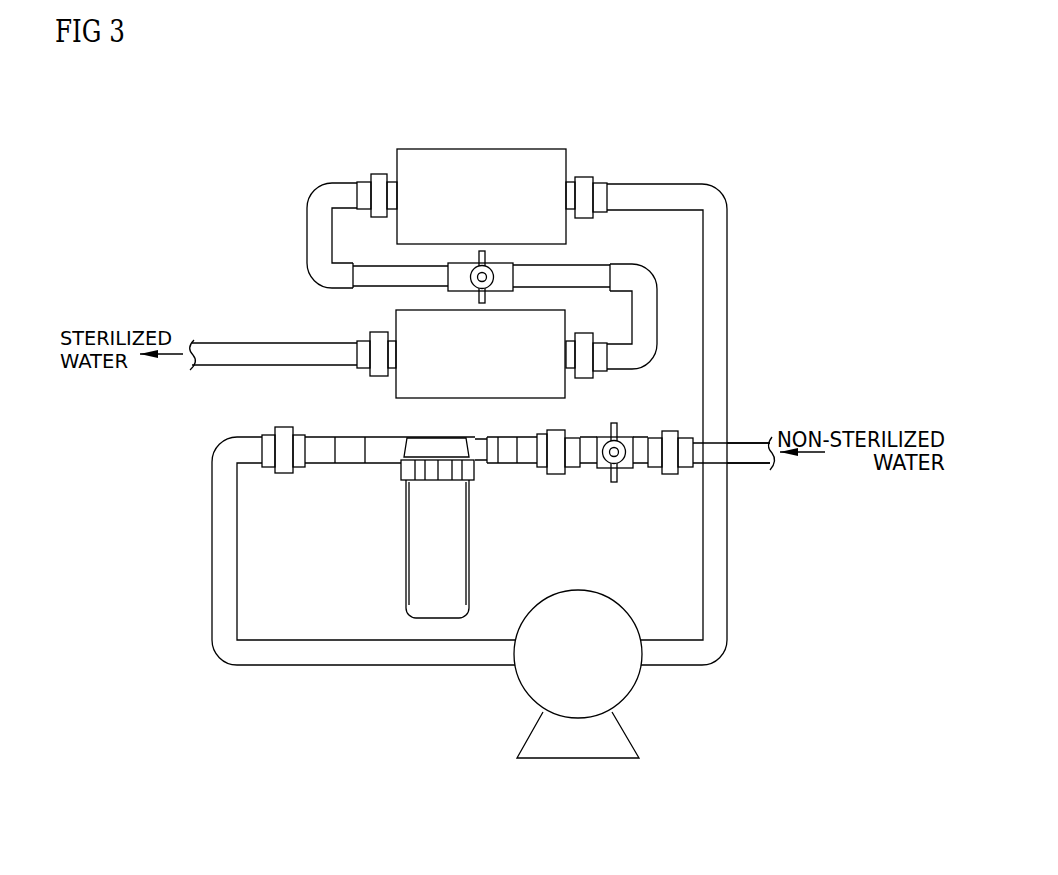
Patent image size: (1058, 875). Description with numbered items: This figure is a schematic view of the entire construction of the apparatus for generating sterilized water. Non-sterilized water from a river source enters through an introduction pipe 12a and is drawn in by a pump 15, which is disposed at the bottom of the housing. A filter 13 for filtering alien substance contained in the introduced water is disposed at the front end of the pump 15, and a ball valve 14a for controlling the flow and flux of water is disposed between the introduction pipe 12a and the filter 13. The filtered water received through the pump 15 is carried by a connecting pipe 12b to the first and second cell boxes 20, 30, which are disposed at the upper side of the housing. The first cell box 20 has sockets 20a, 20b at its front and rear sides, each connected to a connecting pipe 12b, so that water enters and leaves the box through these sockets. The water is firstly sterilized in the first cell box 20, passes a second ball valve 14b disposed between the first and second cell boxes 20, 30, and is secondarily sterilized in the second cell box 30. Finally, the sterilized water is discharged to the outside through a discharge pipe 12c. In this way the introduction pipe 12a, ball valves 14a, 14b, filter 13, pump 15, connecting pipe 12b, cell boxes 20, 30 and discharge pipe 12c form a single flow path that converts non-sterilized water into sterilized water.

The introduction pipe 12a is at (745, 463).
The connecting pipe 12b is at (722, 364).
The discharge pipe 12c is at (247, 343).
The filter 13 is at (421, 549).
The ball valve 14a is at (630, 462).
The ball valve 14b is at (448, 282).
The pump 15 is at (560, 607).
The first cell box 20 is at (482, 157).
The socket 20a is at (583, 178).
The socket 20b is at (380, 176).
The second cell box 30 is at (396, 388).